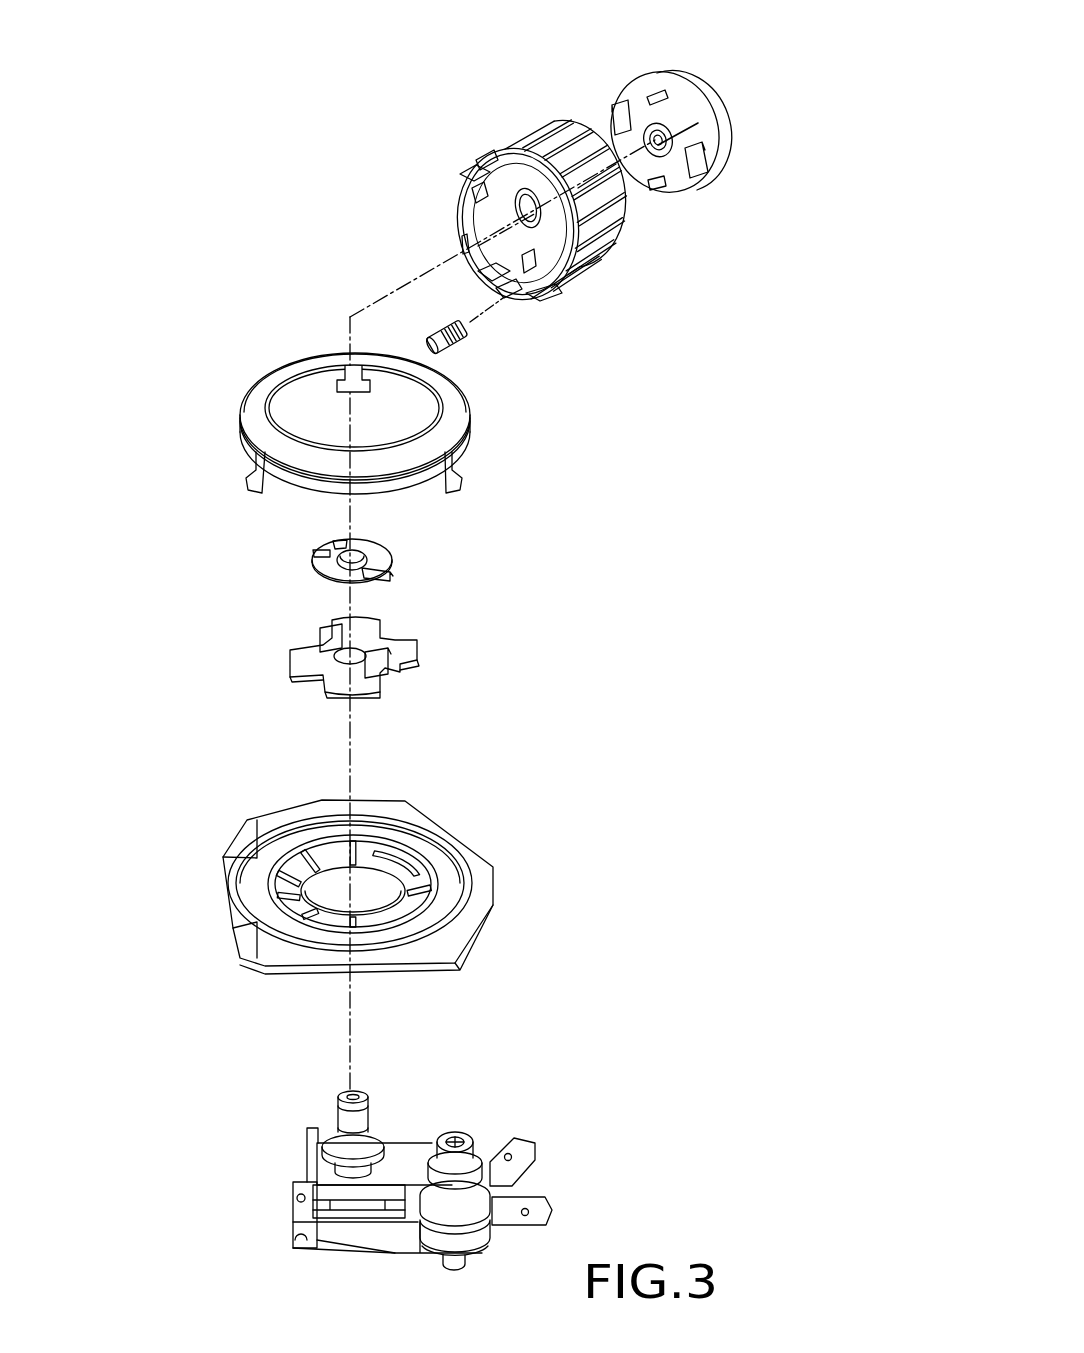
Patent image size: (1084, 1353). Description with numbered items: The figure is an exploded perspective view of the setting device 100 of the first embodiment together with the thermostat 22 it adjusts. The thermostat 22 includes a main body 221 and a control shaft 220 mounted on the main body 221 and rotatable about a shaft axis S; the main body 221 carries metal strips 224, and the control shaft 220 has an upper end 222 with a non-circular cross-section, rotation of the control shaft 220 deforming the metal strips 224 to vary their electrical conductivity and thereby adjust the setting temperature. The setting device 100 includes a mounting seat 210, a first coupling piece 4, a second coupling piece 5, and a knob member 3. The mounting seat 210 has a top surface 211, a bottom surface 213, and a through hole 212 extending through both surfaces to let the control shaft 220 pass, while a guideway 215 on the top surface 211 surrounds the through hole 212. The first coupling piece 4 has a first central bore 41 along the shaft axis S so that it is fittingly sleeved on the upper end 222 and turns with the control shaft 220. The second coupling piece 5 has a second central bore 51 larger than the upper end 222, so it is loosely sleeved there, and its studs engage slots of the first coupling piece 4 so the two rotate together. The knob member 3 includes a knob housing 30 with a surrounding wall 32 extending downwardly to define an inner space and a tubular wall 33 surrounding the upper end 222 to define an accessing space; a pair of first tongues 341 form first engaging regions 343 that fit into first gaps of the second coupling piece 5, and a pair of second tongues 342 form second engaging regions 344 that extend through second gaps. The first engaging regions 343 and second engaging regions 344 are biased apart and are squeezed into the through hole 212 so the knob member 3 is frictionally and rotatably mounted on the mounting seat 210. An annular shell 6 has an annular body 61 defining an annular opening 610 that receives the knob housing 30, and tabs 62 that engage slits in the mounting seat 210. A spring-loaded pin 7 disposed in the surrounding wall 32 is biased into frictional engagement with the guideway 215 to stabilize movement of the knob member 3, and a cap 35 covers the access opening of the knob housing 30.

The setting device 100 is at (599, 220).
The knob member 3 is at (523, 204).
The knob housing 30 is at (567, 220).
The surrounding wall 32 is at (575, 195).
The tubular wall 33 is at (580, 214).
The first tongues 341 is at (490, 170).
The second tongues 342 is at (476, 208).
The first engaging regions 343 is at (492, 172).
The second engaging regions 344 is at (452, 239).
The cap 35 is at (690, 128).
The spring-loaded pin 7 is at (457, 358).
The annular shell 6 is at (334, 407).
The annular body 61 is at (258, 418).
The annular opening 610 is at (307, 398).
The tabs 62 is at (250, 482).
The first coupling piece 4 is at (384, 544).
The first central bore 41 is at (358, 555).
The second coupling piece 5 is at (381, 635).
The second central bore 51 is at (362, 650).
The mounting seat 210 is at (376, 863).
The top surface 211 is at (470, 850).
The through hole 212 is at (372, 896).
The bottom surface 213 is at (372, 888).
The guideway 215 is at (450, 888).
The shaft axis S is at (340, 990).
The thermostat 22 is at (479, 1151).
The control shaft 220 is at (384, 1129).
The main body 221 is at (540, 1148).
The upper end 222 is at (360, 1110).
The metal strips 224 is at (489, 1135).